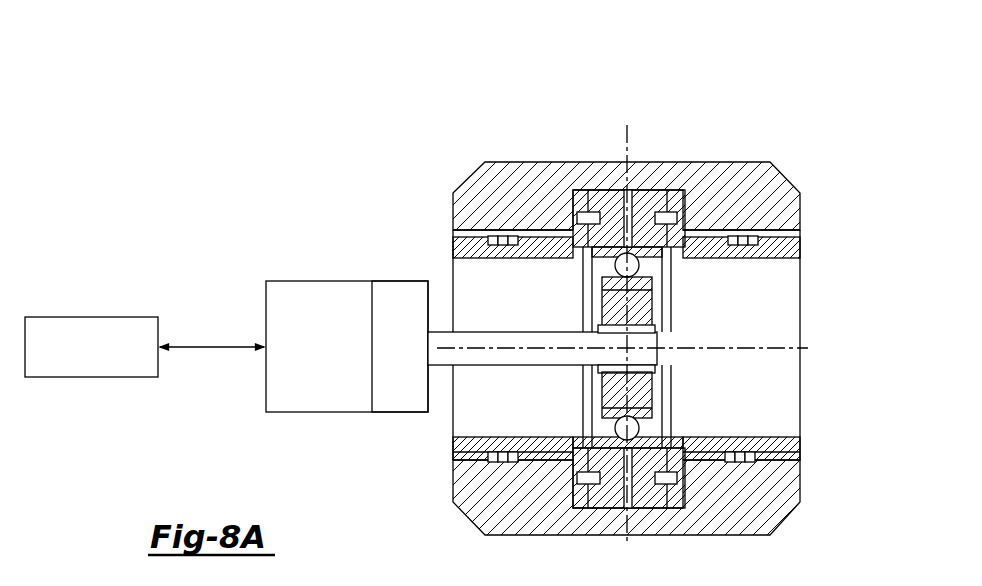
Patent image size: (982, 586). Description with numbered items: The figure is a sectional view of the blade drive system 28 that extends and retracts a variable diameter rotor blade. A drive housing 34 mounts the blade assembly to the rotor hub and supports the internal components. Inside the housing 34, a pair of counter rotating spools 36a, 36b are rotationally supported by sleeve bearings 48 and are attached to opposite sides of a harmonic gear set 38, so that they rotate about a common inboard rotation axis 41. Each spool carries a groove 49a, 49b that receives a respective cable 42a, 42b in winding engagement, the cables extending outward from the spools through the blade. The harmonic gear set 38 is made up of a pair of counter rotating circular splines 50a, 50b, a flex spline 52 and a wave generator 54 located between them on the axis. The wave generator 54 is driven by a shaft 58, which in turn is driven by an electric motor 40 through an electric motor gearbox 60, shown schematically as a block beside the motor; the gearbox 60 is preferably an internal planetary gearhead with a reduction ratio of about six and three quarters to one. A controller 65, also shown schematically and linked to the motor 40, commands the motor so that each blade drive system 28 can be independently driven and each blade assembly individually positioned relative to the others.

The blade drive system 28 is at (606, 287).
The drive housing 34 is at (742, 180).
The counter rotating spool 36a is at (492, 262).
The counter rotating spool 36b is at (717, 270).
The harmonic gear set 38 is at (597, 165).
The electric motor 40 is at (296, 281).
The inboard rotation axis 41 is at (777, 350).
The cable 42a is at (493, 234).
The cable 42b is at (743, 231).
The sleeve bearings 48 is at (782, 450).
The groove 49a is at (505, 452).
The groove 49b is at (735, 462).
The circular spline 50a is at (593, 197).
The circular spline 50b is at (650, 197).
The flex spline 52 is at (645, 450).
The wave generator 54 is at (640, 388).
The shaft 58 is at (534, 331).
The electric motor gearbox 60 is at (410, 412).
The controller 65 is at (80, 317).